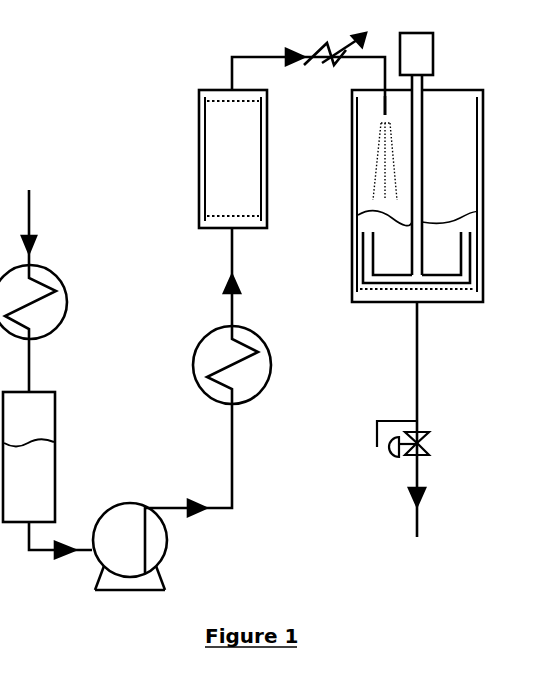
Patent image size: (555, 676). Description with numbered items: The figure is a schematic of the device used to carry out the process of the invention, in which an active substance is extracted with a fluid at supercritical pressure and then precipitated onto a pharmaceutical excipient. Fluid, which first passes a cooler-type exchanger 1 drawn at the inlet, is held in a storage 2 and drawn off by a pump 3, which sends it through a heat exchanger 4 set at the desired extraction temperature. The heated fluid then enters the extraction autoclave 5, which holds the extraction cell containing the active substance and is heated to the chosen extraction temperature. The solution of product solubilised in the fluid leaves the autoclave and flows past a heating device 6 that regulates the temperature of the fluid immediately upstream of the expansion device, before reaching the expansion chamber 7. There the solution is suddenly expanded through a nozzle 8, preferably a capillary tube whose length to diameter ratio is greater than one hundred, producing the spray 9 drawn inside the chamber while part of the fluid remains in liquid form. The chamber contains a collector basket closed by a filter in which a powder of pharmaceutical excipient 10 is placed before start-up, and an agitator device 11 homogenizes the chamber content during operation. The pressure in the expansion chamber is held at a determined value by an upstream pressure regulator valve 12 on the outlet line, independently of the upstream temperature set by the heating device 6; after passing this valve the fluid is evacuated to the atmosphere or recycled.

The heat exchanger (cooler) 1 is at (52, 265).
The storage 2 is at (57, 415).
The pump 3 is at (170, 551).
The heat exchanger 4 is at (212, 331).
The extraction autoclave 5 is at (196, 141).
The heating device 6 is at (272, 55).
The expansion chamber 7 is at (487, 174).
The nozzle 8 is at (379, 100).
The spray 9 is at (373, 165).
The powder of pharmaceutical excipient 10 is at (387, 220).
The agitator device 11 is at (438, 57).
The upstream pressure regulator valve 12 is at (427, 443).